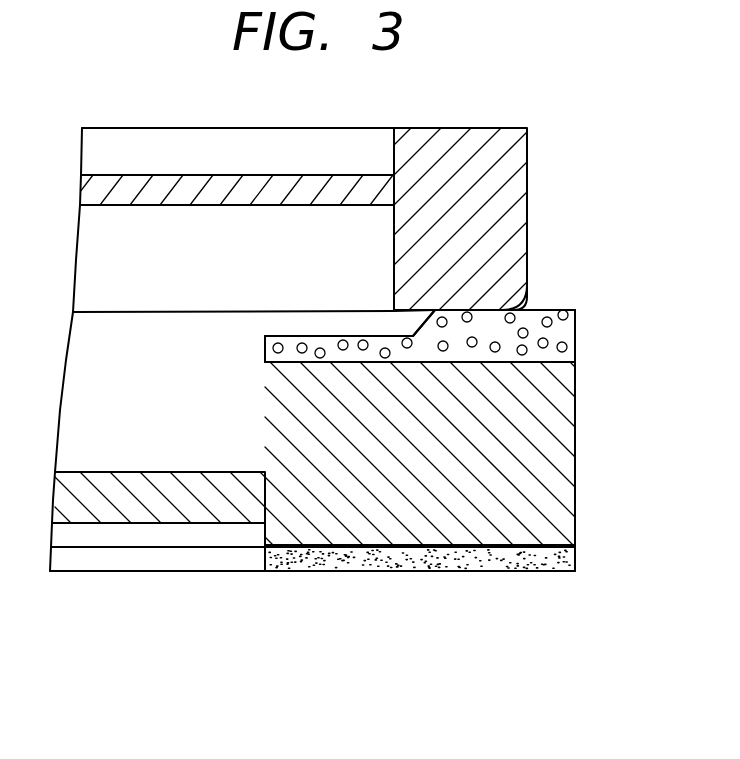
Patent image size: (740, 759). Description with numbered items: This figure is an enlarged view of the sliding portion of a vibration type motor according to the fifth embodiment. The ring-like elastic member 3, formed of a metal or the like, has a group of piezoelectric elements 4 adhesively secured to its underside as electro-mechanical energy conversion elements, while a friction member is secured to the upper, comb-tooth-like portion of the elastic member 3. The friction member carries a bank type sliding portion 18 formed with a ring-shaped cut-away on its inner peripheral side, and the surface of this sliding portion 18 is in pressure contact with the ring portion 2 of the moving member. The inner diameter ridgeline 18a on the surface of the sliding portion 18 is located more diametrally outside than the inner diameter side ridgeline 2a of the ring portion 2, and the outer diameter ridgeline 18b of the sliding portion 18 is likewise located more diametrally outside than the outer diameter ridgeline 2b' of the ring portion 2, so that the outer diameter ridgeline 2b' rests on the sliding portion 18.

The ring portion 2 is at (484, 132).
The inner diameter side ridgeline 2a is at (393, 309).
The outer diameter ridgeline 2b' is at (542, 248).
The sliding portion 18 is at (493, 327).
The inner diameter ridgeline 18a is at (415, 327).
The outer diameter ridgeline 18b is at (574, 308).
The elastic member 3 is at (575, 437).
The group of piezoelectric elements 4 is at (466, 560).